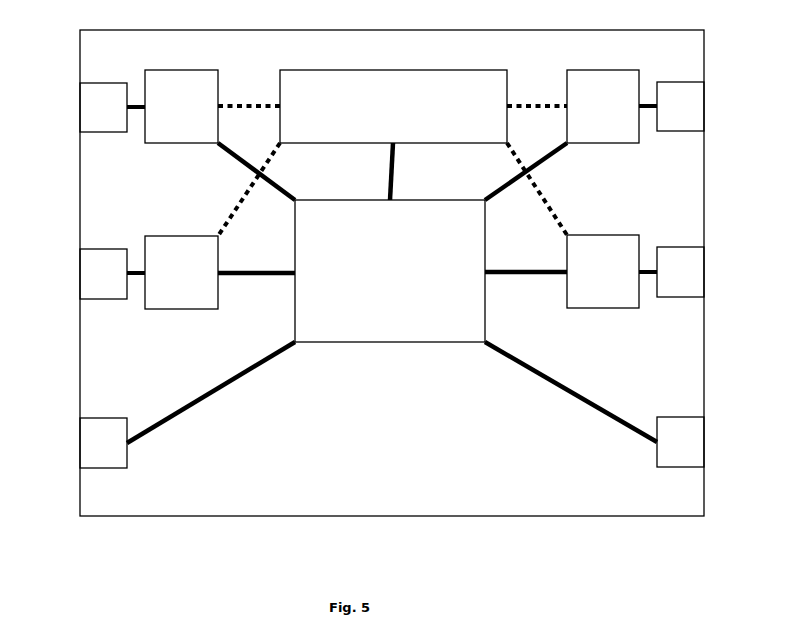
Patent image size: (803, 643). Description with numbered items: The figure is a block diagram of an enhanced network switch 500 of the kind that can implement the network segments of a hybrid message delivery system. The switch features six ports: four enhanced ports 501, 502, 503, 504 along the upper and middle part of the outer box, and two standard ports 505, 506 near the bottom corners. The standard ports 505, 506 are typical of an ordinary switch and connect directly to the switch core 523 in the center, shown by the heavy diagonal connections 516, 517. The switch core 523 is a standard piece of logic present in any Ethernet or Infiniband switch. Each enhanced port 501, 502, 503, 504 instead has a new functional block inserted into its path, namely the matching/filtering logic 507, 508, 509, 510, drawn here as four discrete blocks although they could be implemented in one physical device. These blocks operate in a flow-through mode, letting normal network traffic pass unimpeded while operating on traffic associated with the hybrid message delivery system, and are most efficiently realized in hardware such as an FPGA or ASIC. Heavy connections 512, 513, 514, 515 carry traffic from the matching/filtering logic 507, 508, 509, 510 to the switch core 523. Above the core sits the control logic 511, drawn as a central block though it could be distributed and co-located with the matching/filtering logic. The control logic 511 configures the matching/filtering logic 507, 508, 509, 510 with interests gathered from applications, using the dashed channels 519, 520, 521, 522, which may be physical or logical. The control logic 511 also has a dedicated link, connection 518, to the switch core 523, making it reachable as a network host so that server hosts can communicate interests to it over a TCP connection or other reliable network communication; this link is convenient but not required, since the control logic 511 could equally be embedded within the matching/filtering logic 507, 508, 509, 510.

The enhanced network switch 500 is at (390, 516).
The enhanced port 501 is at (80, 107).
The enhanced port 502 is at (80, 273).
The enhanced port 503 is at (704, 105).
The enhanced port 504 is at (704, 273).
The standard port 505 is at (80, 443).
The standard port 506 is at (704, 442).
The matching/filtering logic 507 is at (180, 70).
The matching/filtering logic 508 is at (182, 309).
The matching/filtering logic 509 is at (603, 70).
The matching/filtering logic 510 is at (603, 308).
The control logic 511 is at (393, 71).
The connection 512 is at (243, 165).
The connection 513 is at (233, 272).
The connection 514 is at (548, 153).
The connection 515 is at (508, 272).
The connection 516 is at (203, 402).
The connection 517 is at (580, 400).
The connection 518 is at (391, 175).
The configuration channel 519 is at (248, 103).
The configuration channel 520 is at (533, 103).
The configuration channel 521 is at (232, 210).
The configuration channel 522 is at (549, 228).
The switch core 523 is at (390, 342).